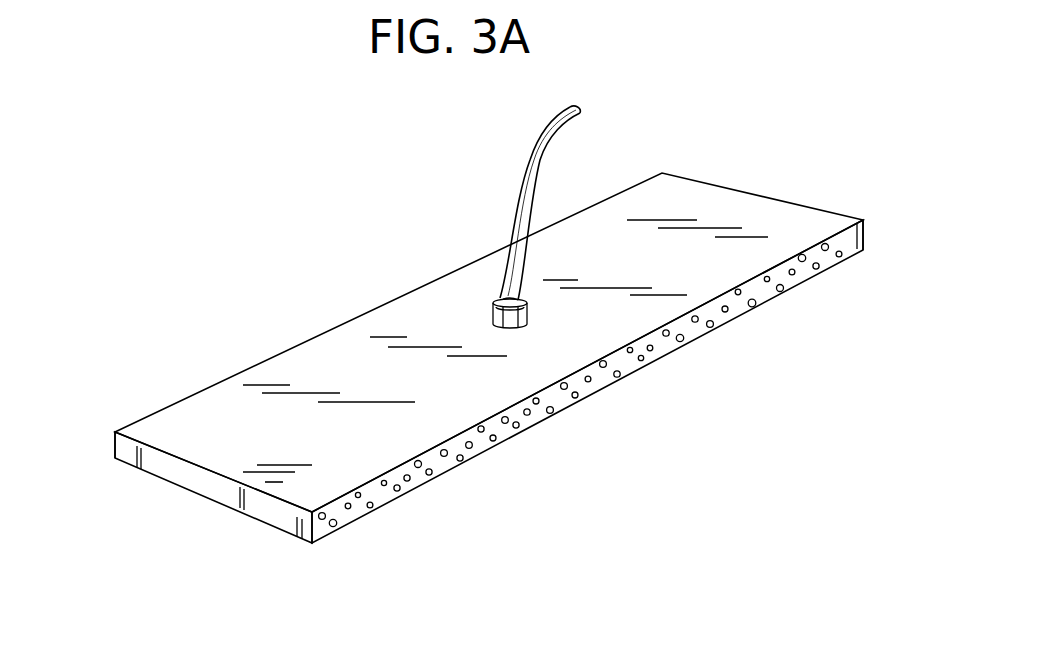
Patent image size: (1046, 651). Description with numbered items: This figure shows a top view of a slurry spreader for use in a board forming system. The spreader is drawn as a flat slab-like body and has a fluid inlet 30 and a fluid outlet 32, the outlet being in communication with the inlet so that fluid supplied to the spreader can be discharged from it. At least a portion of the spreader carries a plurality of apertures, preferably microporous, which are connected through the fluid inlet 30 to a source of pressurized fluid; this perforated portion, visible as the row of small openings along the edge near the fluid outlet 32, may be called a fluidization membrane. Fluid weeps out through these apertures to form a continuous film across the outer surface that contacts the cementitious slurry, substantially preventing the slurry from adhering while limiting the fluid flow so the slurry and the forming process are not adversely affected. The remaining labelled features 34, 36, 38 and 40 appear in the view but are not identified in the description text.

The fluid inlet 30 is at (498, 320).
The fluid outlet 32 is at (637, 360).
The top surface 34 is at (238, 430).
The front side surface 36 is at (212, 500).
The end faces 38 is at (167, 467).
The tube 40 is at (533, 173).